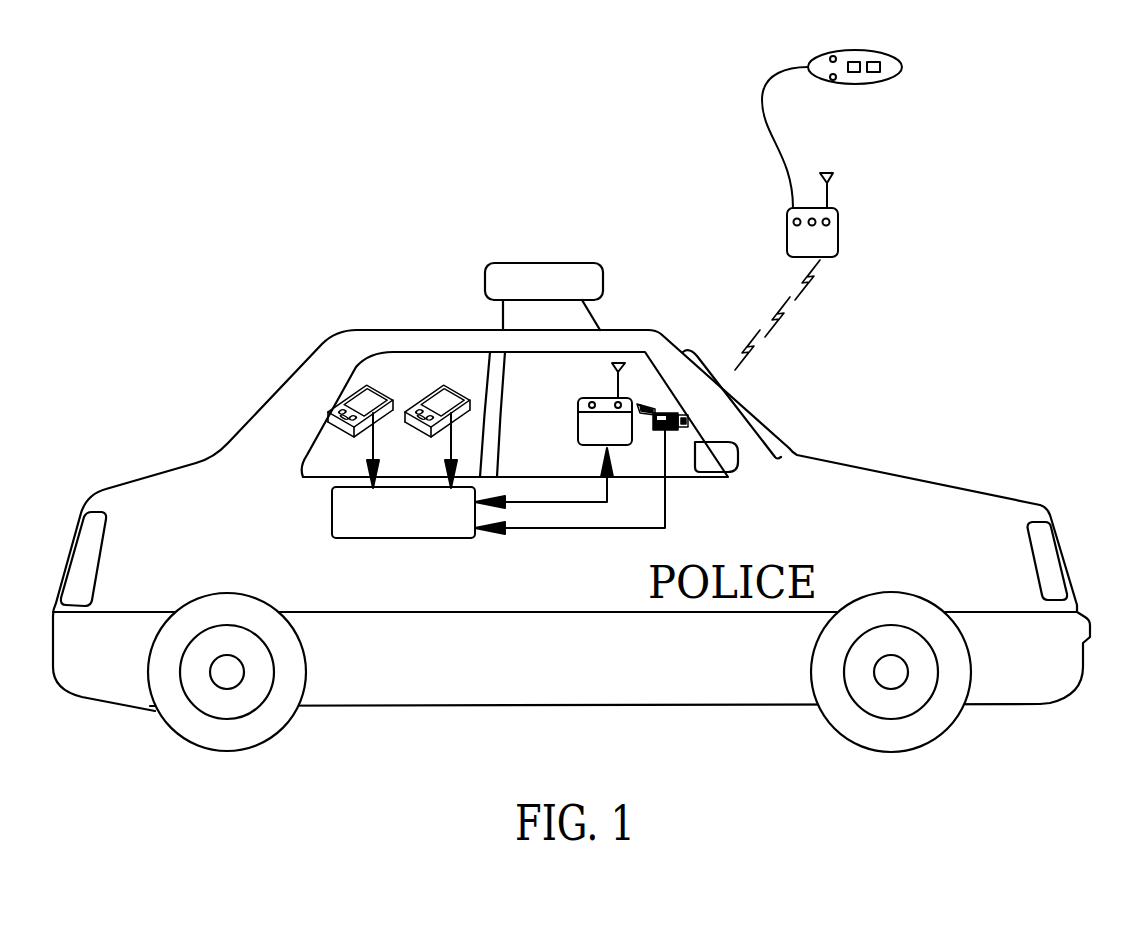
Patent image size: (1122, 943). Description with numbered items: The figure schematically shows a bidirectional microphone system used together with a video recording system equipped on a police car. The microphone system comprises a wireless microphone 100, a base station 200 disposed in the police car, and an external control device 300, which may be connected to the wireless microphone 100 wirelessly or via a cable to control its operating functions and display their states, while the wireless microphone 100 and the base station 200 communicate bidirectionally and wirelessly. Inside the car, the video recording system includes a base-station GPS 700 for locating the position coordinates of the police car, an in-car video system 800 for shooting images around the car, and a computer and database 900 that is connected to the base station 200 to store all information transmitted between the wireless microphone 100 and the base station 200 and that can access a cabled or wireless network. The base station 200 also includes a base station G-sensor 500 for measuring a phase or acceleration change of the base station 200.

The wireless microphone 100 is at (840, 232).
The base station 200 is at (607, 398).
The external control device 300 is at (900, 63).
The base station G-sensor 500 is at (430, 397).
The base-station GPS 700 is at (353, 403).
The in-car video system 800 is at (692, 407).
The computer and database 900 is at (332, 512).